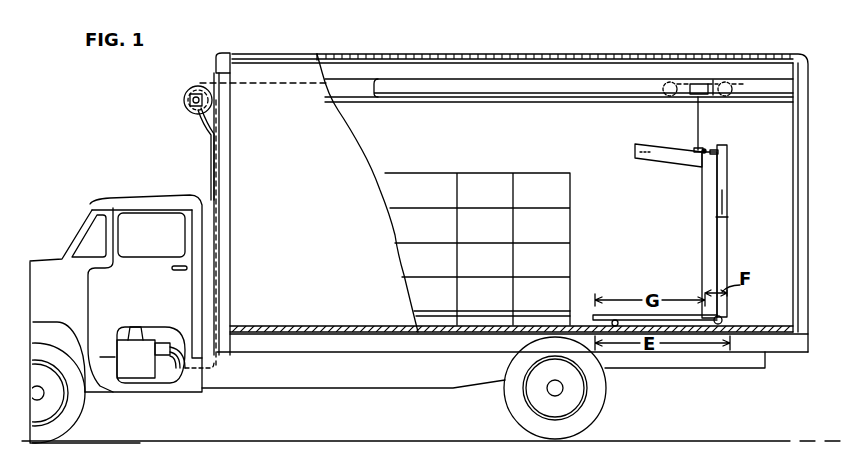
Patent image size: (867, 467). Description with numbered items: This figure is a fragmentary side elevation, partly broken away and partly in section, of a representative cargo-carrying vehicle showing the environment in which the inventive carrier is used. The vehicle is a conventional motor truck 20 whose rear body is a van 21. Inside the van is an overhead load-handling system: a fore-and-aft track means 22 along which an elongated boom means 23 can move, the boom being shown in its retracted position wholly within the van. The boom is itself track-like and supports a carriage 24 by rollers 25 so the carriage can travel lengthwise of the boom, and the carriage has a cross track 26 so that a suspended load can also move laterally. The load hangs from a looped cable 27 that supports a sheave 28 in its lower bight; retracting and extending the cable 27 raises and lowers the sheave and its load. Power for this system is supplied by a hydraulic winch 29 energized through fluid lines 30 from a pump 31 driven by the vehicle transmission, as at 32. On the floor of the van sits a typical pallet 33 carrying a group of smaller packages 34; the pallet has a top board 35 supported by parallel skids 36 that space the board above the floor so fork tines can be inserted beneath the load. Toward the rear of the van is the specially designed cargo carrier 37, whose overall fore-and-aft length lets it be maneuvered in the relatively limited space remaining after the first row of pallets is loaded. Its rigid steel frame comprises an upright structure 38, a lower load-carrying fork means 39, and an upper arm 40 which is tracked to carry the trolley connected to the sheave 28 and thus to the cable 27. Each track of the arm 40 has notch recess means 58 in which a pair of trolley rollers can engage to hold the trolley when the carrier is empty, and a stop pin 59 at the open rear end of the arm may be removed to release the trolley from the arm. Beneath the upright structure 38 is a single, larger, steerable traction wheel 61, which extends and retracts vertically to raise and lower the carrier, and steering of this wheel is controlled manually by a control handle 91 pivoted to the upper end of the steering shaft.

The motor truck 20 is at (333, 406).
The van 21 is at (308, 334).
The track means 22 is at (363, 93).
The boom means 23 is at (618, 91).
The carriage 24 is at (713, 80).
The rollers 25 is at (668, 80).
The cross track 26 is at (690, 95).
The looped cable 27 is at (700, 113).
The sheave 28 is at (697, 148).
The hydraulic winch 29 is at (190, 86).
The fluid lines 30 is at (213, 162).
The pump 31 is at (163, 343).
The vehicle transmission 32 is at (140, 371).
The pallet 33 is at (470, 328).
The packages 34 is at (408, 178).
The top board 35 is at (533, 313).
The skids 36 is at (495, 322).
The cargo carrier 37 is at (748, 238).
The upright structure 38 is at (700, 240).
The fork means 39 is at (593, 316).
The arm 40 is at (668, 165).
The notch recess means 58 is at (704, 149).
The stop pin 59 is at (719, 148).
The traction wheel 61 is at (724, 318).
The control handle 91 is at (720, 172).